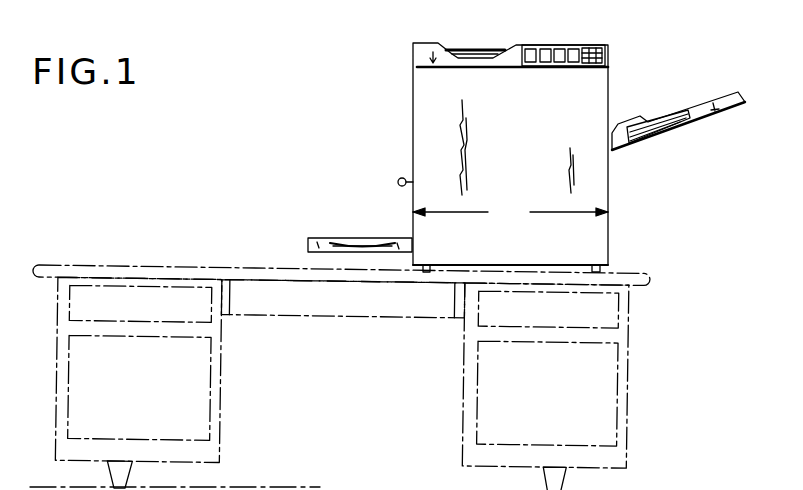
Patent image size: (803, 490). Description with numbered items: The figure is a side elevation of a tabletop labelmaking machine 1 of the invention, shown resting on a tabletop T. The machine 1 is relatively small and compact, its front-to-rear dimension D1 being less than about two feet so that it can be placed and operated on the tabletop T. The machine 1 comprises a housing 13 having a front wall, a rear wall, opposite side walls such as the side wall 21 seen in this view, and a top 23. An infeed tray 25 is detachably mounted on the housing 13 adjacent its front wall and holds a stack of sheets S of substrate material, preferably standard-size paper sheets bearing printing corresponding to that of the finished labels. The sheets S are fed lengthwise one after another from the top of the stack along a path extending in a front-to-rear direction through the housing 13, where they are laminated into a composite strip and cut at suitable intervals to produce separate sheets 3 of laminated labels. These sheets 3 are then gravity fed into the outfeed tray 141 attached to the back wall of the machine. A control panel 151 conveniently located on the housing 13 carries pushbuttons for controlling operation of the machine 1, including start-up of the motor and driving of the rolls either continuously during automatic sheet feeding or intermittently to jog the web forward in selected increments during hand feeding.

The labelmaking machine 1 is at (640, 58).
The sheets of laminated labels 3 is at (350, 238).
The housing 13 is at (404, 109).
The side wall 21 is at (594, 240).
The top 23 is at (500, 14).
The infeed tray 25 is at (696, 127).
The outfeed tray 141 is at (306, 240).
The control panel 151 is at (573, 50).
The sheets of substrate material S is at (666, 120).
The tabletop T is at (84, 263).
The front-to-rear dimension D1 is at (510, 214).